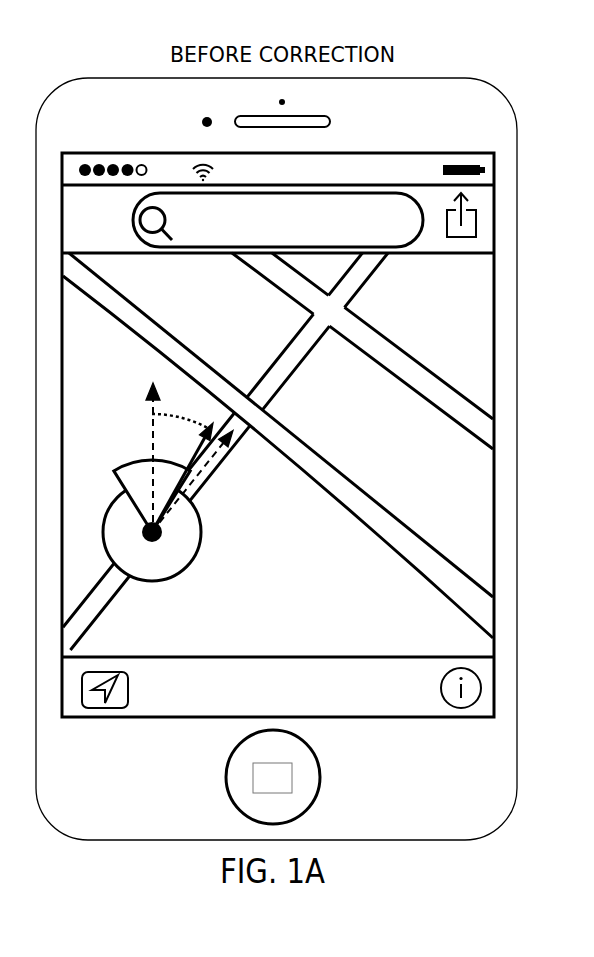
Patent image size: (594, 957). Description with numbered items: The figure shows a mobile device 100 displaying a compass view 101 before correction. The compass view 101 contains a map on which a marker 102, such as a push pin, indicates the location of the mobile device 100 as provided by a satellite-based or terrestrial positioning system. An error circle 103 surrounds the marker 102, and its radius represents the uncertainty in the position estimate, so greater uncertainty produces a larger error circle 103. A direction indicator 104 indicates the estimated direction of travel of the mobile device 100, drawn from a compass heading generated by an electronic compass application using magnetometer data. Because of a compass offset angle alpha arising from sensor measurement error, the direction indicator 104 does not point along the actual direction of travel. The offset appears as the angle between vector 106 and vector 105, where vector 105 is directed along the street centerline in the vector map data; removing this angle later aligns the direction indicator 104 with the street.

The mobile device 100 is at (485, 117).
The compass view 101 is at (430, 650).
The marker 102 is at (160, 537).
The error circle 103 is at (203, 518).
The direction indicator 104 is at (143, 457).
The vector 105 is at (236, 437).
The vector 106 is at (151, 396).